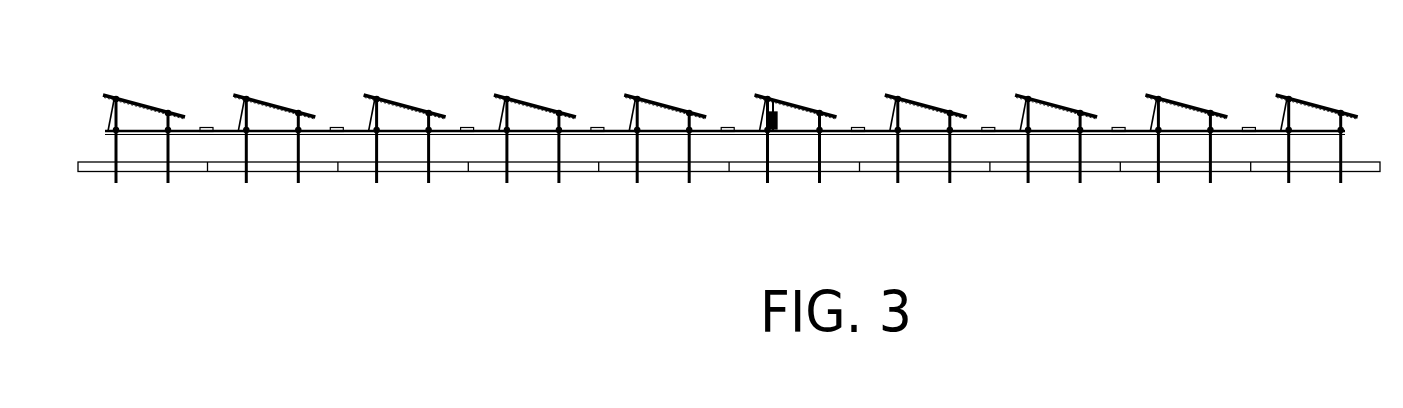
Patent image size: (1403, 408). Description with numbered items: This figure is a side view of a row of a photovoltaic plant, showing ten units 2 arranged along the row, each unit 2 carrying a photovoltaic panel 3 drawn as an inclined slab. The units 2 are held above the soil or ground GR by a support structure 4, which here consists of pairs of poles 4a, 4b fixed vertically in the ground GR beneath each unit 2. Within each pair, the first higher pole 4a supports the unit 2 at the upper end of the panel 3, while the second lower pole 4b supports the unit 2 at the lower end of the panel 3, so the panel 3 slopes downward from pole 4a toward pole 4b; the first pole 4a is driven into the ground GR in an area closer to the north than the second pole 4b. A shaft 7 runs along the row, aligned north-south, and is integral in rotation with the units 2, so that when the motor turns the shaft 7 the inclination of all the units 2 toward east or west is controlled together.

The unit 2 is at (183, 116).
The photovoltaic panel 3 is at (665, 105).
The support structure 4 is at (300, 149).
The first higher pole 4a is at (116, 149).
The second lower pole 4b is at (169, 149).
The shaft 7 is at (456, 130).
The ground GR is at (457, 166).